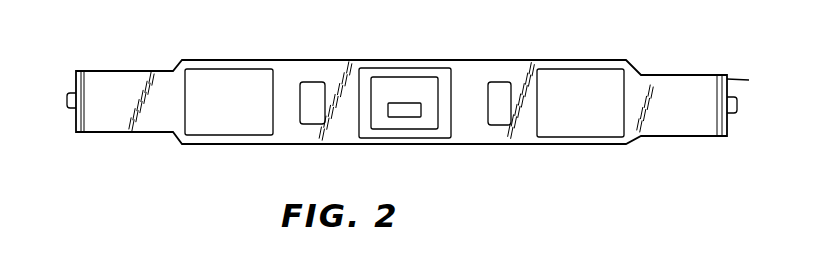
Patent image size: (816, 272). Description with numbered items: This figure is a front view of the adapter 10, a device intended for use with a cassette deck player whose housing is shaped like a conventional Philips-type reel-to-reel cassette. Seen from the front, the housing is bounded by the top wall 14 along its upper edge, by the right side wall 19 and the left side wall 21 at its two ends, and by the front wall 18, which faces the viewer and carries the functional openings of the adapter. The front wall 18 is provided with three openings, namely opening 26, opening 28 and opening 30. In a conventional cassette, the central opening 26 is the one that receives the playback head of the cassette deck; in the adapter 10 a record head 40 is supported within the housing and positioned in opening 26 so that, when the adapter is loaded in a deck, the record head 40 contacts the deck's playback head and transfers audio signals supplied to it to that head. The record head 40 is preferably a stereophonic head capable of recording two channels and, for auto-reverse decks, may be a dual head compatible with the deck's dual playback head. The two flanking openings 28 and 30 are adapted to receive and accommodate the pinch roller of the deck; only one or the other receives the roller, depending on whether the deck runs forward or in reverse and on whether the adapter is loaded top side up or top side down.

The adapter 10 is at (122, 58).
The top wall 14 is at (683, 75).
The front wall 18 is at (706, 85).
The right side wall 19 is at (750, 89).
The left side wall 21 is at (78, 79).
The opening 26 is at (444, 72).
The opening 28 is at (232, 70).
The opening 30 is at (569, 70).
The record head 40 is at (380, 78).